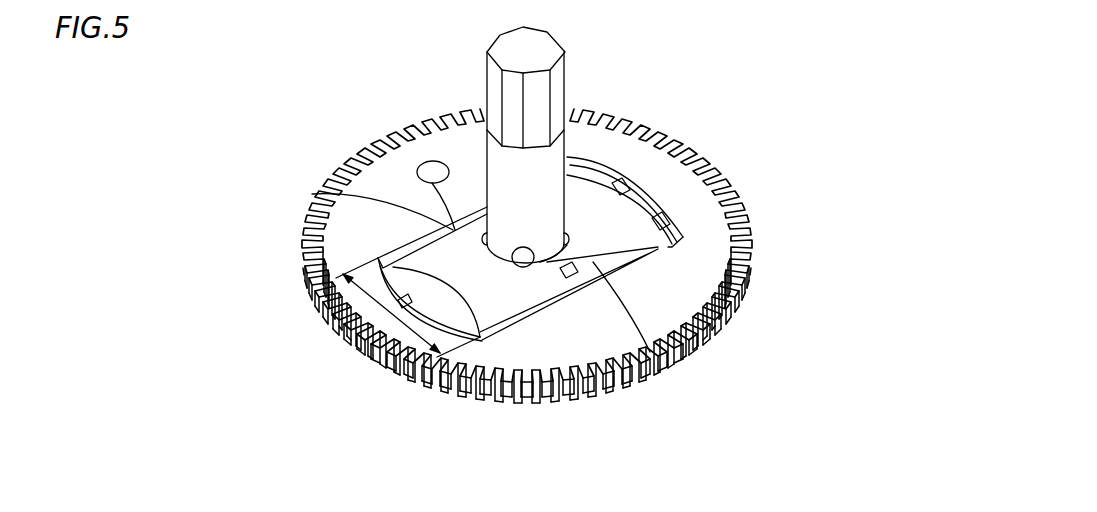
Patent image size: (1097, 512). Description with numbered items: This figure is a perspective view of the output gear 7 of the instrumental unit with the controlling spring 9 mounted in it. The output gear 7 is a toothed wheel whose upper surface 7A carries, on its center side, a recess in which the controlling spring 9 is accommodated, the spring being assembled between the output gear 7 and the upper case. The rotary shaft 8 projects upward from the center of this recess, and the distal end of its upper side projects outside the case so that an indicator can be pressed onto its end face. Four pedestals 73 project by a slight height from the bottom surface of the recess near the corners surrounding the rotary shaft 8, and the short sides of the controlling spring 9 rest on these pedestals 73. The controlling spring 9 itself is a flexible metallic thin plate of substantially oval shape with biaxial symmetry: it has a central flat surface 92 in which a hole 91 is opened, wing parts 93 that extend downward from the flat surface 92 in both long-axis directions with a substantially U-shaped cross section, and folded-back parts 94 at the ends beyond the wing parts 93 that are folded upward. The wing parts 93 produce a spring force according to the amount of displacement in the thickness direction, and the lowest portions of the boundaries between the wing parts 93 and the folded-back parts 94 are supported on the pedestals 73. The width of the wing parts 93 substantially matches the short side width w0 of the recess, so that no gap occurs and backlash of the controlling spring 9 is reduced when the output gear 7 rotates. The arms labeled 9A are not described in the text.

The output gear 7 is at (735, 142).
The upper surface 7A is at (697, 282).
The rotary shaft 8 is at (508, 160).
The controlling spring 9 is at (418, 166).
The arm 9A is at (347, 193).
The pedestals 73 is at (335, 297).
The hole 91 is at (530, 270).
The flat surface 92 is at (656, 372).
The wing parts 93 is at (577, 197).
The folded-back parts 94 is at (635, 210).
The short side width w0 is at (355, 347).